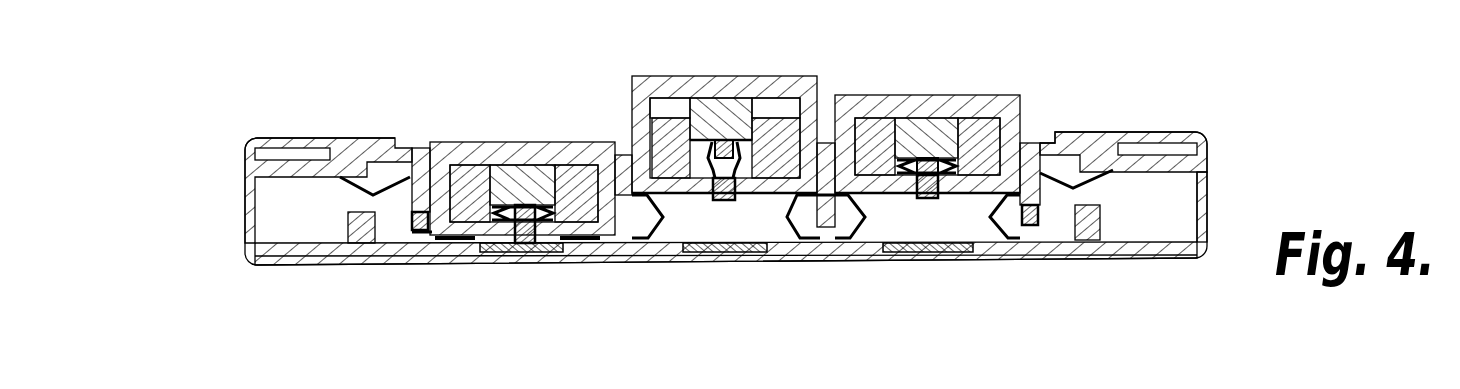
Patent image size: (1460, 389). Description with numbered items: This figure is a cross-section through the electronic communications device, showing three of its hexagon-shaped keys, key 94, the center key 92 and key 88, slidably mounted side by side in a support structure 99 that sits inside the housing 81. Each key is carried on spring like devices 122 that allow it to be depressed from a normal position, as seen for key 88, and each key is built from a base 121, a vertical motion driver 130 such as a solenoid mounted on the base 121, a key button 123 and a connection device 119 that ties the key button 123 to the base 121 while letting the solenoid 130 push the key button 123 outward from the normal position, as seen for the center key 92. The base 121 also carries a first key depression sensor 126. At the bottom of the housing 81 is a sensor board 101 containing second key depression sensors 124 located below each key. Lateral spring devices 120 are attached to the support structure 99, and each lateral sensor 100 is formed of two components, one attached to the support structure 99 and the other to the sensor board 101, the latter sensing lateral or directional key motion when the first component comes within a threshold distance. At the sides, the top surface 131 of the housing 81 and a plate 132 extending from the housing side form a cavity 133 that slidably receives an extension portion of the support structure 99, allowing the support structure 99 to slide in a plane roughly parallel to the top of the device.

The housing 81 is at (379, 265).
The key 88 is at (928, 95).
The center key 92 is at (725, 76).
The key 94 is at (530, 142).
The support structure 99 is at (412, 148).
The lateral sensor 100 is at (415, 221).
The sensor board 101 is at (313, 265).
The connection device 119 is at (748, 140).
The lateral spring device 120 is at (1066, 172).
The base 121 is at (968, 185).
The spring like device 122 is at (666, 225).
The key button 123 is at (652, 76).
The second key depression sensor 124 is at (924, 245).
The first key depression sensor 126 is at (958, 196).
The vertical motion driver 130 is at (775, 193).
The top surface 131 is at (293, 138).
The plate 132 is at (298, 180).
The cavity 133 is at (304, 152).